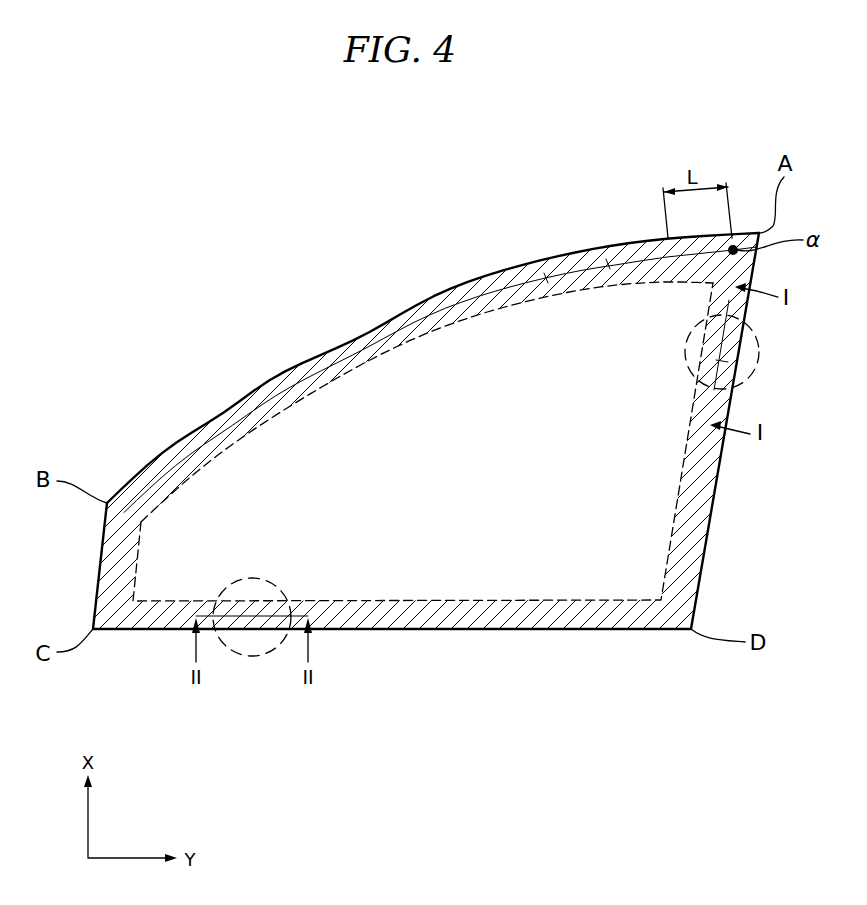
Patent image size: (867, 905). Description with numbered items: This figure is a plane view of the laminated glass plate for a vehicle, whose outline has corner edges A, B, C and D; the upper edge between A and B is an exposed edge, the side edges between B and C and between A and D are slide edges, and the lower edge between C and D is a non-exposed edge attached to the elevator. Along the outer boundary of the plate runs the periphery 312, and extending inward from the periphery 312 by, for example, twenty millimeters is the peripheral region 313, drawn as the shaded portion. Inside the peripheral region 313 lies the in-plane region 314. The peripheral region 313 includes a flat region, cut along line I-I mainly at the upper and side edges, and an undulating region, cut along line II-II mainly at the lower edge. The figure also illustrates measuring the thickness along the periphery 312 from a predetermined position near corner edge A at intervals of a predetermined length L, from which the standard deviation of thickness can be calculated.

The periphery 312 is at (430, 298).
The peripheral region 313 is at (345, 347).
The in-plane region 314 is at (292, 430).